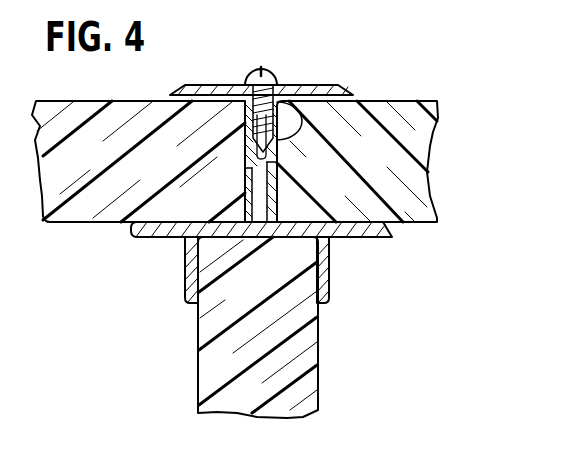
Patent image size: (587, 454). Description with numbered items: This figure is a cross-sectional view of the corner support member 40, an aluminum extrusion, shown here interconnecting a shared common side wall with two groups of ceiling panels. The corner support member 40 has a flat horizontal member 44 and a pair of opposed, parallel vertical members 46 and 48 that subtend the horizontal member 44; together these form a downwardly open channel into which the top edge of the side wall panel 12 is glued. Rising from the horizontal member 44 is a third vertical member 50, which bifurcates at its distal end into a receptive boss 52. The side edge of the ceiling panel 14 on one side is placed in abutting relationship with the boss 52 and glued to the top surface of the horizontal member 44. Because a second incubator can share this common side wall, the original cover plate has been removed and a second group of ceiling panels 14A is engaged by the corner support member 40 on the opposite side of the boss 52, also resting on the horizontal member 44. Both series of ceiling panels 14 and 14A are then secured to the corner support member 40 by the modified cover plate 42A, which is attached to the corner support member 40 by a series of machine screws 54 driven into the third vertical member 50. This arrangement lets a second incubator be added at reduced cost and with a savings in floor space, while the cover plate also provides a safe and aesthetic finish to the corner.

The side wall panel 12 is at (263, 343).
The ceiling panel 14 is at (378, 160).
The second group of ceiling panels 14A is at (166, 172).
The corner support member 40 is at (243, 305).
The modified cover plate 42A is at (313, 84).
The horizontal member 44 is at (393, 233).
The vertical member 46 is at (197, 300).
The vertical member 48 is at (323, 302).
The third vertical member 50 is at (256, 192).
The receptive boss 52 is at (300, 115).
The machine screw 54 is at (253, 73).